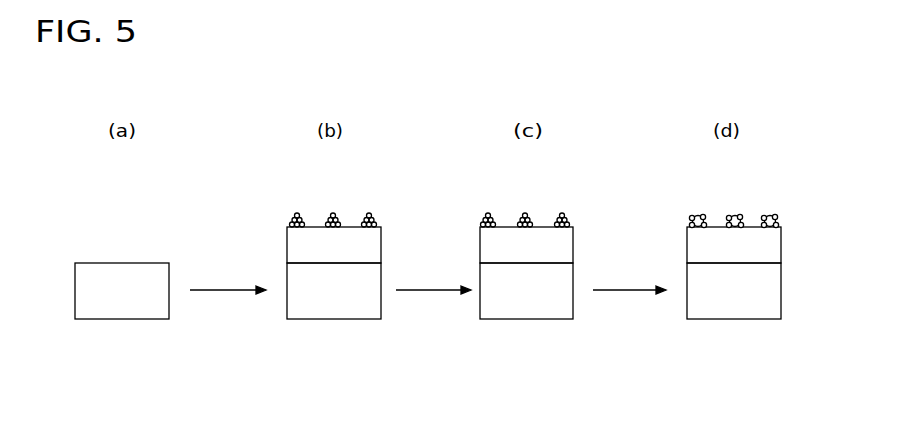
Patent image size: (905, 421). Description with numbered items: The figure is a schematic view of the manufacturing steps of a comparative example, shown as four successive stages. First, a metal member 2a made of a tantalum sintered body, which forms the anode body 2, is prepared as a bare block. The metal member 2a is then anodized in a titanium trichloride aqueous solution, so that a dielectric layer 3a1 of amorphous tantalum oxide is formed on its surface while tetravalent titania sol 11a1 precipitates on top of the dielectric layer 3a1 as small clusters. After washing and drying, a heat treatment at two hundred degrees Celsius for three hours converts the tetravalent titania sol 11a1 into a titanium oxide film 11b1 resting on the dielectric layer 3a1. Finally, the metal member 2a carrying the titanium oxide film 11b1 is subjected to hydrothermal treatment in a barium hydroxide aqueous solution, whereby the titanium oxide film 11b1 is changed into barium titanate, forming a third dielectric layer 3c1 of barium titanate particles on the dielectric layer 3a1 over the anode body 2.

The metal member 2a is at (117, 303).
The anode body 2 is at (335, 301).
The dielectric layer 3a1 is at (374, 250).
The tetravalent titania sol 11a1 is at (335, 212).
The titanium oxide film 11b1 is at (527, 212).
The third dielectric layer 3c1 is at (738, 212).